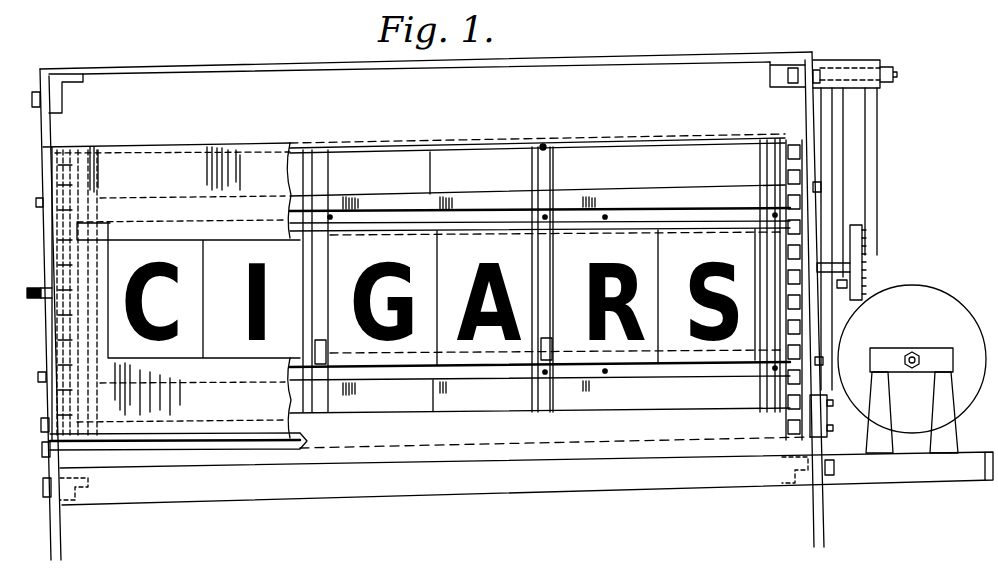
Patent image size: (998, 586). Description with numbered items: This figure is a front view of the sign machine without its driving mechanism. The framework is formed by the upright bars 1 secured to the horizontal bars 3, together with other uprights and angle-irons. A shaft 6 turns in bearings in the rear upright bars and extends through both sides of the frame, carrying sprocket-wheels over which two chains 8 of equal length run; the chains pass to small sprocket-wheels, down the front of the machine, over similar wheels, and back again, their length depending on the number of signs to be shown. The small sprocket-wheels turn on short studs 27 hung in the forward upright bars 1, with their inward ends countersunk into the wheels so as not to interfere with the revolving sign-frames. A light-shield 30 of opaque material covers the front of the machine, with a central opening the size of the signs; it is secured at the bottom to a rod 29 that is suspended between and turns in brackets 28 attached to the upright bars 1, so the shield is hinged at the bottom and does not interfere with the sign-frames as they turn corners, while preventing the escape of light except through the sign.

The upright bars 1 is at (45, 128).
The horizontal bars 3 is at (499, 62).
The shaft 6 is at (38, 287).
The chains 8 is at (803, 232).
The studs 27 is at (40, 200).
The brackets 28 is at (41, 430).
The rod 29 is at (306, 442).
The light-shield 30 is at (167, 290).